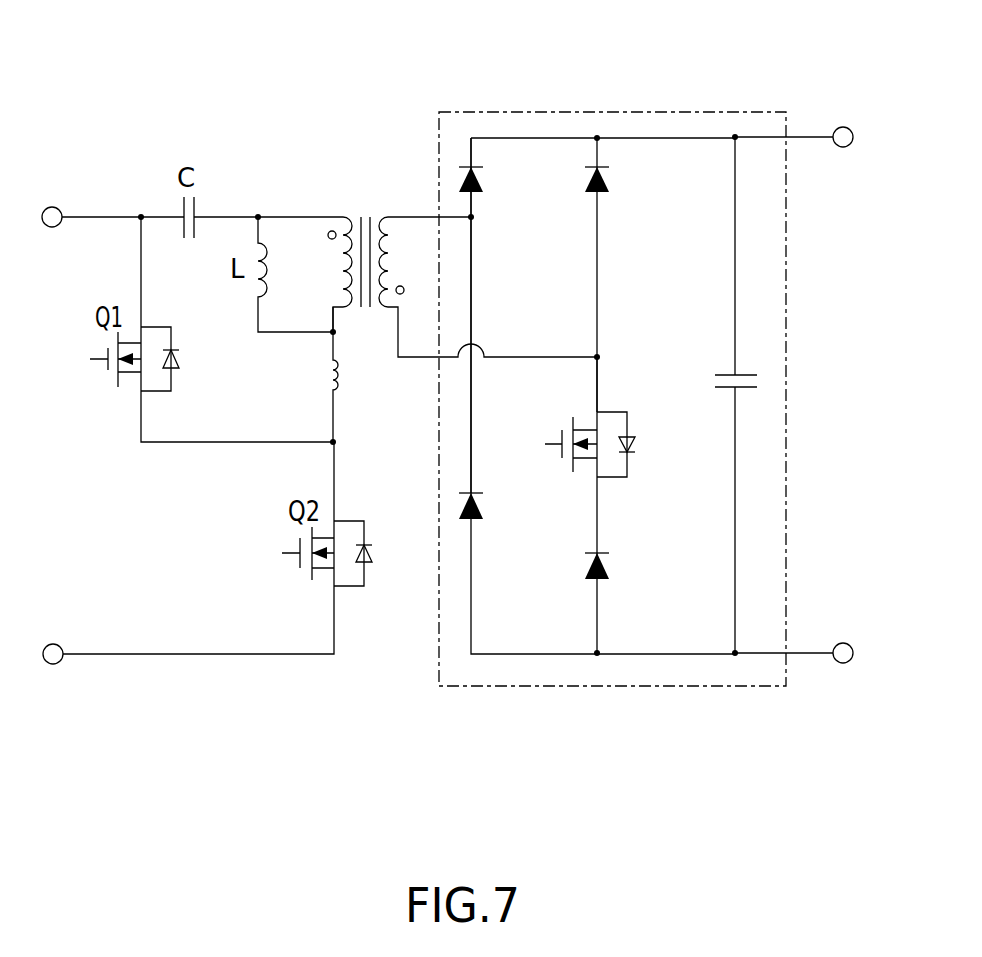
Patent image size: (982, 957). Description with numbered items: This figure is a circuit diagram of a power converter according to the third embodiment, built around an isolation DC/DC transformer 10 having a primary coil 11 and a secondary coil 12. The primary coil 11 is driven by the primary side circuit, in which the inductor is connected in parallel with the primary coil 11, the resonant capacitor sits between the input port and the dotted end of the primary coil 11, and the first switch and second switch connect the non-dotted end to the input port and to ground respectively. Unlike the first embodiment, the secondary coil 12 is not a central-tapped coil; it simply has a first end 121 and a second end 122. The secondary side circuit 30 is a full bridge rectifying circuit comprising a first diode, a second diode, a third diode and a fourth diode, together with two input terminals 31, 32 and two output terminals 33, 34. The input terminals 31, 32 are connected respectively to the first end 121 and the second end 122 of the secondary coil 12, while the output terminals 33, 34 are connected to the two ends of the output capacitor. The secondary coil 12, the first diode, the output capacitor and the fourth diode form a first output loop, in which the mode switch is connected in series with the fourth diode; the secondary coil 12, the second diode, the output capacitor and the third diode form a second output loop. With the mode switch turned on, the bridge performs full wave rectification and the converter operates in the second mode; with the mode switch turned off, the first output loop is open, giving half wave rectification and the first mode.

The DC/DC transformer 10 is at (422, 225).
The primary coil 11 is at (349, 262).
The secondary coil 12 is at (386, 217).
The first end 121 is at (418, 217).
The second end 122 is at (420, 358).
The secondary side circuit 30 is at (638, 112).
The input terminal 31 is at (471, 217).
The input terminal 32 is at (597, 357).
The output terminal 33 is at (735, 137).
The output terminal 34 is at (735, 653).